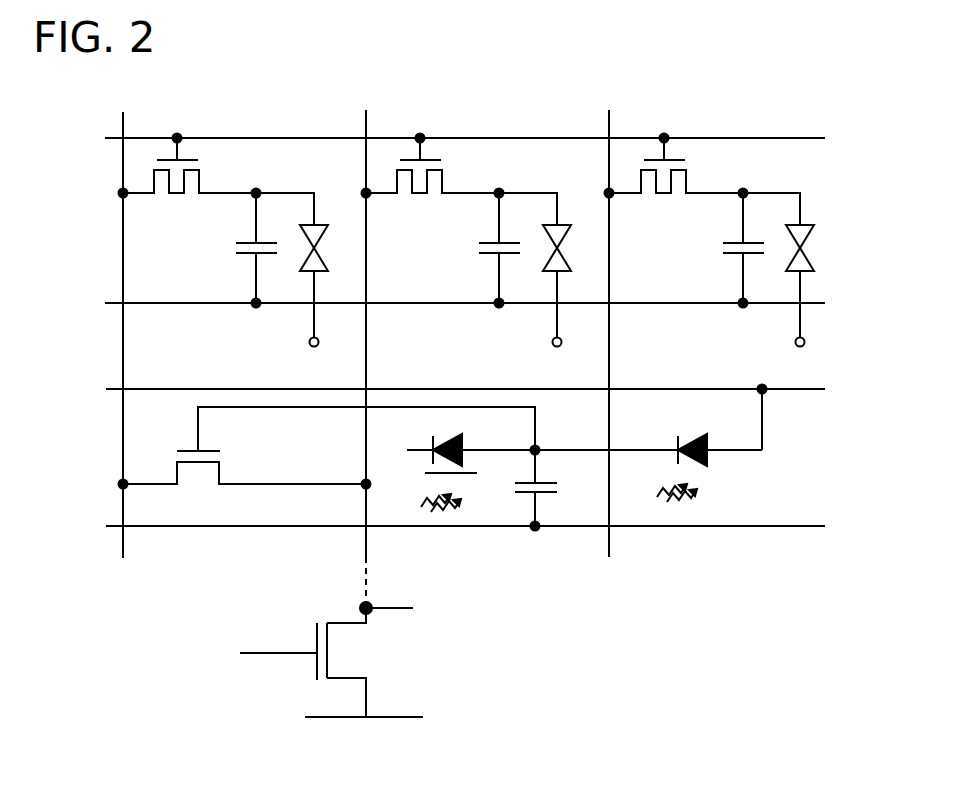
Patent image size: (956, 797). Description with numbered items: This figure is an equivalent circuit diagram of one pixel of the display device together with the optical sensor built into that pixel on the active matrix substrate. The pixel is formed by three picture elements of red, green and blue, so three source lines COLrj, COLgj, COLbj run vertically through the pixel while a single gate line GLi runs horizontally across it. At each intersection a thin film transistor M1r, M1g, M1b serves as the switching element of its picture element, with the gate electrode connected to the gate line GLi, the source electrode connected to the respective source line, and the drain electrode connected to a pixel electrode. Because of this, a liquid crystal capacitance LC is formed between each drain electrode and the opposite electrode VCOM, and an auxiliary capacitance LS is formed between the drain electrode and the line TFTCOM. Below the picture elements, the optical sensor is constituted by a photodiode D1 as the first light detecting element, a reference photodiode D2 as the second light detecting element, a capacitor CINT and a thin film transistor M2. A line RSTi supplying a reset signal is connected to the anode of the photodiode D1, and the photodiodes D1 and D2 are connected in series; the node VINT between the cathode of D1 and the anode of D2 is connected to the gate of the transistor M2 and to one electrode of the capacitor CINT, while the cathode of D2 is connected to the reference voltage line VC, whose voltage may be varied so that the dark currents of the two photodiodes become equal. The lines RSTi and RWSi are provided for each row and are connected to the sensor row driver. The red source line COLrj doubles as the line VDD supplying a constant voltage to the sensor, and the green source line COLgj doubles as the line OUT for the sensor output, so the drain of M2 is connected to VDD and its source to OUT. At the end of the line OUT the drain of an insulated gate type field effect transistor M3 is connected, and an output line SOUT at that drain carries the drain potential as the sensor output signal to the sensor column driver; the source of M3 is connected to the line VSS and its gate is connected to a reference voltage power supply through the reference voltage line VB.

The source line for the red picture element COLrj is at (121, 320).
The source line for the green picture element COLgj is at (364, 343).
The source line for the blue picture element COLbj is at (607, 320).
The gate line GLi is at (446, 138).
The TFTCOM line TFTCOM is at (428, 303).
The reset signal line RSTi is at (491, 413).
The readout signal line RWSi is at (491, 525).
The thin film transistor of the red picture element M1r is at (188, 178).
The thin film transistor of the green picture element M1g is at (431, 178).
The thin film transistor of the blue picture element M1b is at (674, 178).
The auxiliary capacitance LS is at (242, 248).
The liquid crystal capacitance LC is at (303, 265).
The opposite electrode VCOM is at (548, 357).
The thin film transistor of the optical sensor M2 is at (327, 448).
The second light detecting element D2 is at (463, 473).
The first light detecting element D1 is at (648, 468).
The capacitor CINT is at (557, 490).
The node between photodiodes VINT is at (558, 439).
The reference voltage line VC is at (411, 431).
The constant voltage supply line VDD is at (123, 581).
The sensor output line OUT is at (397, 550).
The insulated gate type field effect transistor M3 is at (350, 659).
The output line SOUT is at (417, 610).
The reference voltage line VB is at (263, 653).
The VSS line VSS is at (385, 716).